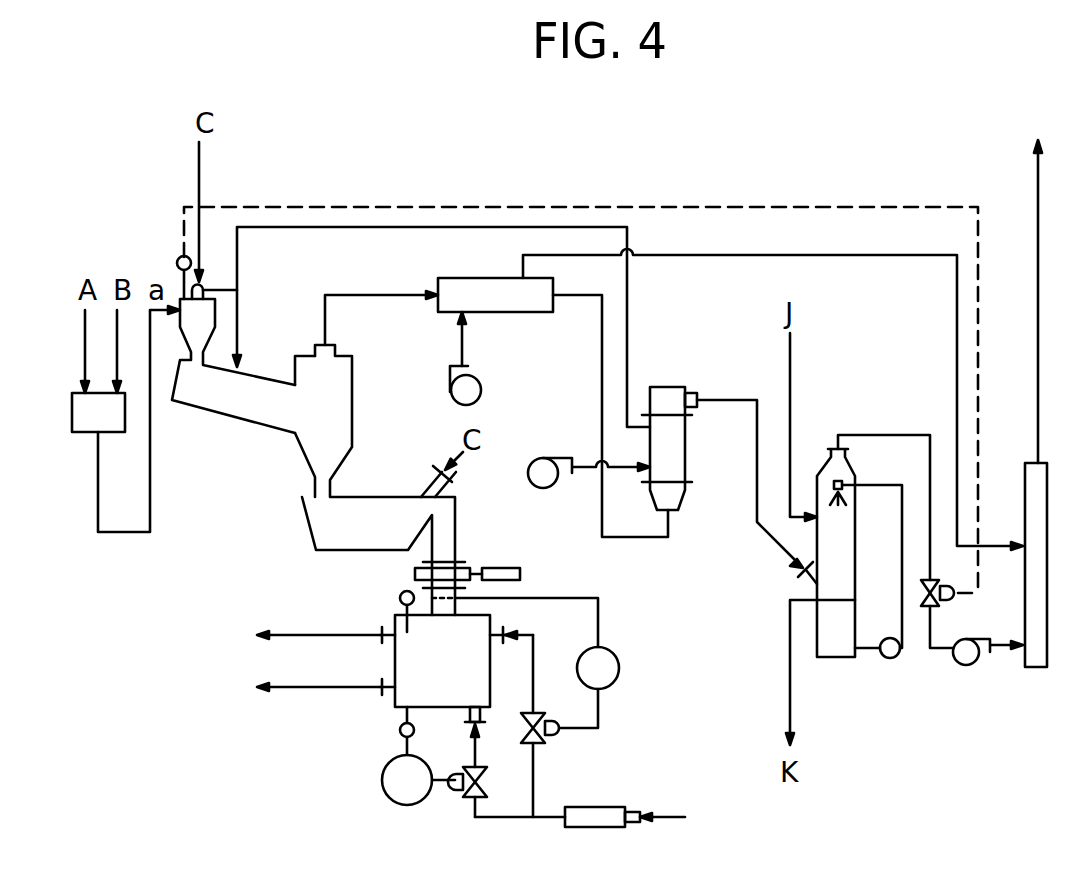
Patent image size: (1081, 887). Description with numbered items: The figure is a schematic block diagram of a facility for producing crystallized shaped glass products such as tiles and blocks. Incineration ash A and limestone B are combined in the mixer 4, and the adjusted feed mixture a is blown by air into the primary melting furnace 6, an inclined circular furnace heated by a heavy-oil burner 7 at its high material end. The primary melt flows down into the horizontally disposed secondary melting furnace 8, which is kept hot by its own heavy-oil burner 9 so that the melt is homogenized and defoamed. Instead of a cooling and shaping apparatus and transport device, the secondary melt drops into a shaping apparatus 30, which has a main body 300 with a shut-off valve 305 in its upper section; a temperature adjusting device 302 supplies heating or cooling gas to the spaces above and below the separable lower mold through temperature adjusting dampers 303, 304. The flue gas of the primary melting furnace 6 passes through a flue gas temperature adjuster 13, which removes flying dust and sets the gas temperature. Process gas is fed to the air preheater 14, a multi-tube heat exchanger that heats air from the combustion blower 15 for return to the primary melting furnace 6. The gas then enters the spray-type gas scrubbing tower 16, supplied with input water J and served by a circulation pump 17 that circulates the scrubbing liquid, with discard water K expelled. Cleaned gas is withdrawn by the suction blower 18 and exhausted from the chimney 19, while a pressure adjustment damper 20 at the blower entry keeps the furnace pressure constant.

The mixer 4 is at (72, 417).
The primary melting furnace 6 is at (227, 418).
The burner 7 is at (203, 284).
The secondary melting furnace 8 is at (355, 552).
The burner 9 is at (432, 478).
The flue gas temperature adjuster 13 is at (510, 313).
The air preheater 14 is at (685, 446).
The combustion blower 15 is at (548, 458).
The gas scrubbing tower 16 is at (856, 580).
The circulation pump 17 is at (888, 660).
The suction blower 18 is at (968, 665).
The chimney 19 is at (1025, 512).
The pressure adjustment damper 20 is at (955, 603).
The shaping apparatus 30 is at (355, 778).
The main body 300 is at (392, 703).
The temperature adjusting device 302 is at (615, 807).
The temperature adjusting damper 303 is at (563, 743).
The temperature adjusting damper 304 is at (452, 795).
The shut-off valve 305 is at (495, 568).